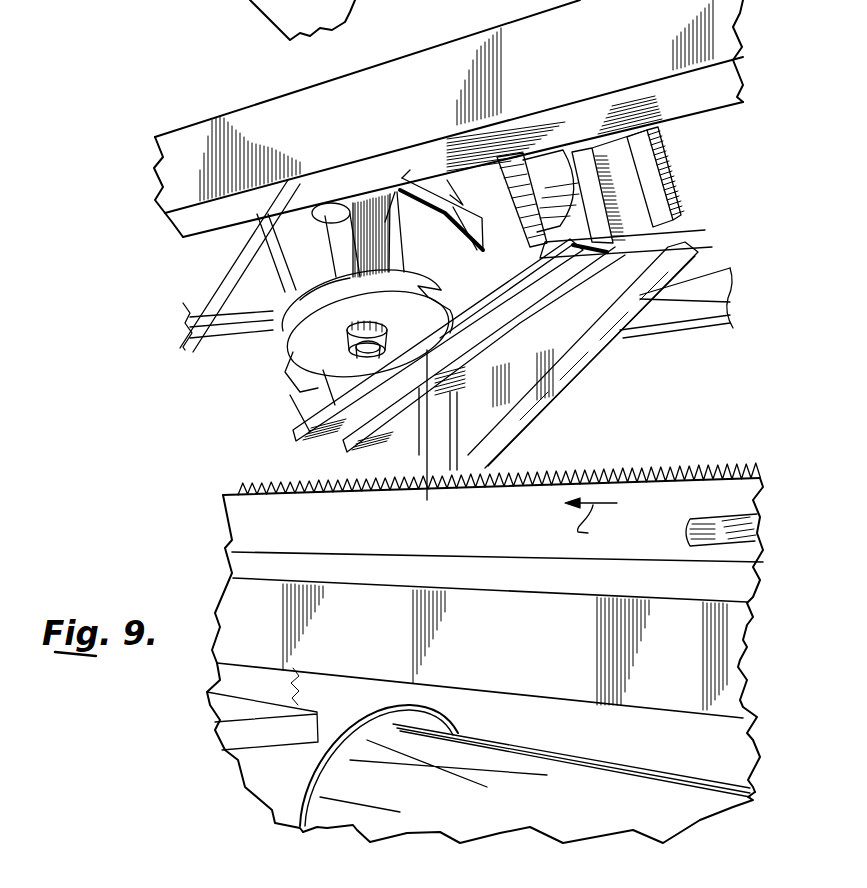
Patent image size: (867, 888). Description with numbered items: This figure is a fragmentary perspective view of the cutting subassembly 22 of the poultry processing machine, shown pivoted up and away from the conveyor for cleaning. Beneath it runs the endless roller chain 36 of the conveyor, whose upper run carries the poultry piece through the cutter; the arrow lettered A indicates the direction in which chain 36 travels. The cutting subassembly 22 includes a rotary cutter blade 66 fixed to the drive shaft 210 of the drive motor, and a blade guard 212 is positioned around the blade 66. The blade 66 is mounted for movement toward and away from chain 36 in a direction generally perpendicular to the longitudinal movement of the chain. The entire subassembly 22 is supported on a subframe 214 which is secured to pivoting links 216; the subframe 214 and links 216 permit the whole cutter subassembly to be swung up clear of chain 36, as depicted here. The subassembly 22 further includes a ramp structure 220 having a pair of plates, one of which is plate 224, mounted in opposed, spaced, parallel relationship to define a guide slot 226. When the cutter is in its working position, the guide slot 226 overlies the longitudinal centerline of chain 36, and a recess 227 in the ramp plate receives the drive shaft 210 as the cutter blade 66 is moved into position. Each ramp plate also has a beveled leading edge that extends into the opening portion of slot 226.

The cutting subassembly 22 is at (228, 366).
The endless roller chain 36 is at (680, 455).
The rotary cutter blade 66 is at (292, 377).
The drive shaft 210 is at (337, 240).
The blade guard 212 is at (307, 308).
The subframe 214 is at (510, 182).
The pivoting links 216 is at (205, 310).
The ramp structure 220 is at (438, 252).
The plate 224 is at (697, 247).
The guide slot 226 is at (515, 330).
The recess 227 is at (485, 383).